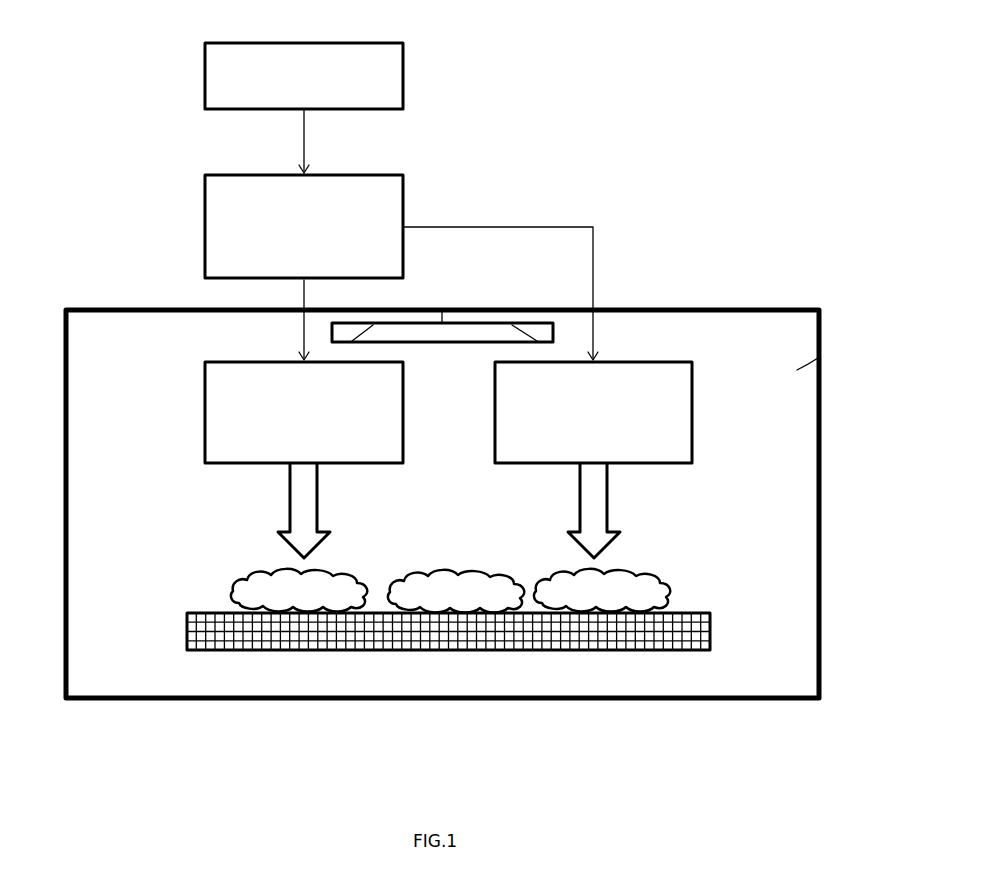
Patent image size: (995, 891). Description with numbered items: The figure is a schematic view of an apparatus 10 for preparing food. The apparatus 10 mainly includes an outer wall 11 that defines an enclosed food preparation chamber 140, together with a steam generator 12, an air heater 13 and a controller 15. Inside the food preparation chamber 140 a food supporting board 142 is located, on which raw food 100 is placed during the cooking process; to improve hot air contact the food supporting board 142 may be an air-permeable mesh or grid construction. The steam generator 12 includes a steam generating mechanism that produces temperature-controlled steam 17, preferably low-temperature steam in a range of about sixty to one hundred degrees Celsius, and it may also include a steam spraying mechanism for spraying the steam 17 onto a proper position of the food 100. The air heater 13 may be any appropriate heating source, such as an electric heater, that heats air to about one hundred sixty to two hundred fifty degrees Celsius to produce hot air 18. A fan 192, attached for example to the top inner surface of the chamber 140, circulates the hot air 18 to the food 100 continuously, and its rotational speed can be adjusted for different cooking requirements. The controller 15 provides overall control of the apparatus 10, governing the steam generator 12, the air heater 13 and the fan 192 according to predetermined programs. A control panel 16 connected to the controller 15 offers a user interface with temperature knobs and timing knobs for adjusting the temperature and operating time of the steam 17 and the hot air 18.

The apparatus 10 is at (91, 161).
The outer wall 11 is at (64, 425).
The steam generator 12 is at (205, 410).
The air heater 13 is at (650, 361).
The controller 15 is at (404, 205).
The control panel 16 is at (404, 78).
The temperature-controlled steam 17 is at (303, 492).
The hot air 18 is at (593, 484).
The raw food 100 is at (663, 588).
The food preparation chamber 140 is at (817, 360).
The food supporting board 142 is at (205, 634).
The fan 192 is at (487, 323).